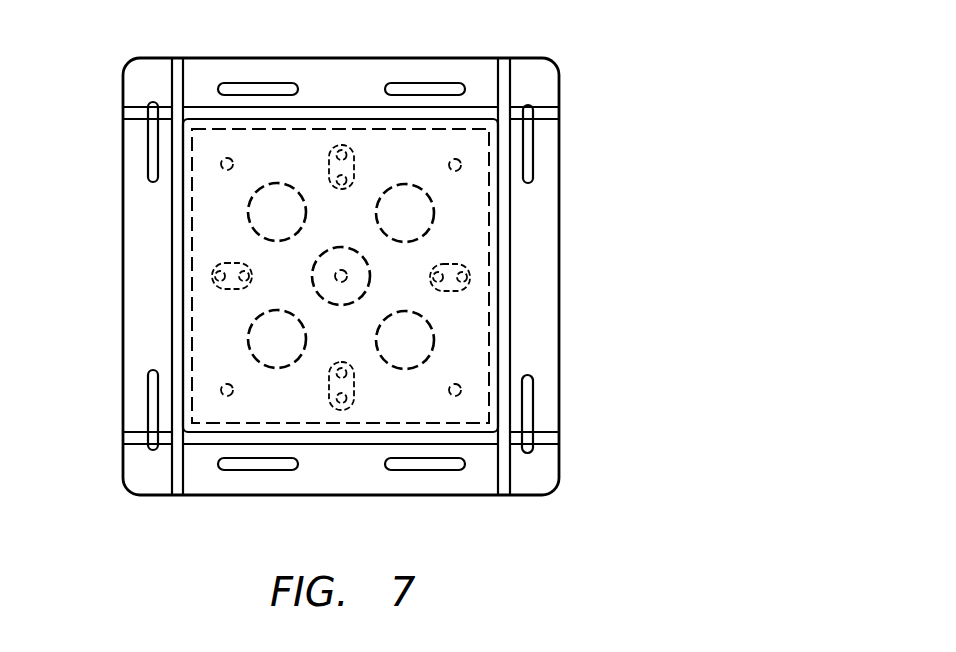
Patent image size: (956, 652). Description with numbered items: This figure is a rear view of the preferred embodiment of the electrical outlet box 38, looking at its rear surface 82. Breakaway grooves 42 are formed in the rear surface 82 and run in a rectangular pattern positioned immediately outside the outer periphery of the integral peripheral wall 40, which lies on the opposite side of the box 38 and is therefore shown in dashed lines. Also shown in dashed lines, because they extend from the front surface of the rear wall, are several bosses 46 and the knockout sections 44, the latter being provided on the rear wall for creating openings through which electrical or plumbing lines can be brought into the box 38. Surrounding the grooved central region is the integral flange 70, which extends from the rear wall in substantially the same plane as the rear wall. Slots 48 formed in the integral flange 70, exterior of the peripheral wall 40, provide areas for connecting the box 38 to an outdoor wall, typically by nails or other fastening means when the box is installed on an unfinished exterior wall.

The electrical outlet box 38 is at (618, 32).
The integral peripheral wall 40 is at (492, 214).
The breakaway grooves 42 is at (310, 113).
The knockout sections 44 is at (307, 207).
The bosses 46 is at (328, 388).
The slots 48 is at (529, 152).
The integral flange 70 is at (482, 477).
The rear surface 82 is at (394, 168).